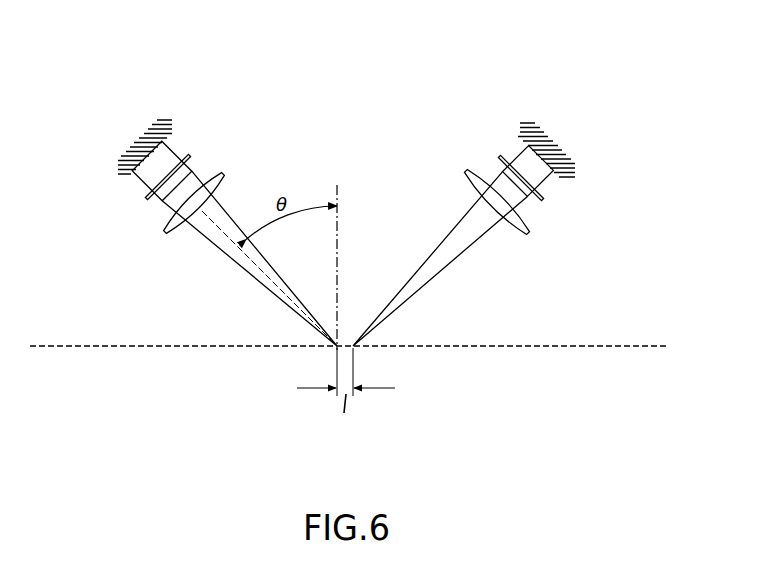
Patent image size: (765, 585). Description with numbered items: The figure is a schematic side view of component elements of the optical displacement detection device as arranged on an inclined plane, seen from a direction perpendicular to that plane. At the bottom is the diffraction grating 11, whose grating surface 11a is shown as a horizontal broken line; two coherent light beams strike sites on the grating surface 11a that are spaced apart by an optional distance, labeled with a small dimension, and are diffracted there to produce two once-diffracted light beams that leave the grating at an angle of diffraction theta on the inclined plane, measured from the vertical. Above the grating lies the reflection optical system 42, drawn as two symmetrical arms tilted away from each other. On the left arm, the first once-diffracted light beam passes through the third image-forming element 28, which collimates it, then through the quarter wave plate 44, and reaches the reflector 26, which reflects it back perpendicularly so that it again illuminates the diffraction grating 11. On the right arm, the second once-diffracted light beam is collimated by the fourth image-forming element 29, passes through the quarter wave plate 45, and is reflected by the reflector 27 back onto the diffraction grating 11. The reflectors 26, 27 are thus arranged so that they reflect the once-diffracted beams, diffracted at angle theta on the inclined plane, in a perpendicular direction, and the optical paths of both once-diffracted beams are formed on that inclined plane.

The diffraction grating 11 is at (349, 343).
The grating surface 11a is at (545, 342).
The reflection optical system 42 is at (326, 126).
The reflector 26 is at (142, 150).
The reflector 27 is at (537, 150).
The quarter wave plate 44 is at (188, 158).
The quarter wave plate 45 is at (543, 193).
The third image-forming element 28 is at (223, 172).
The fourth image-forming element 29 is at (510, 231).